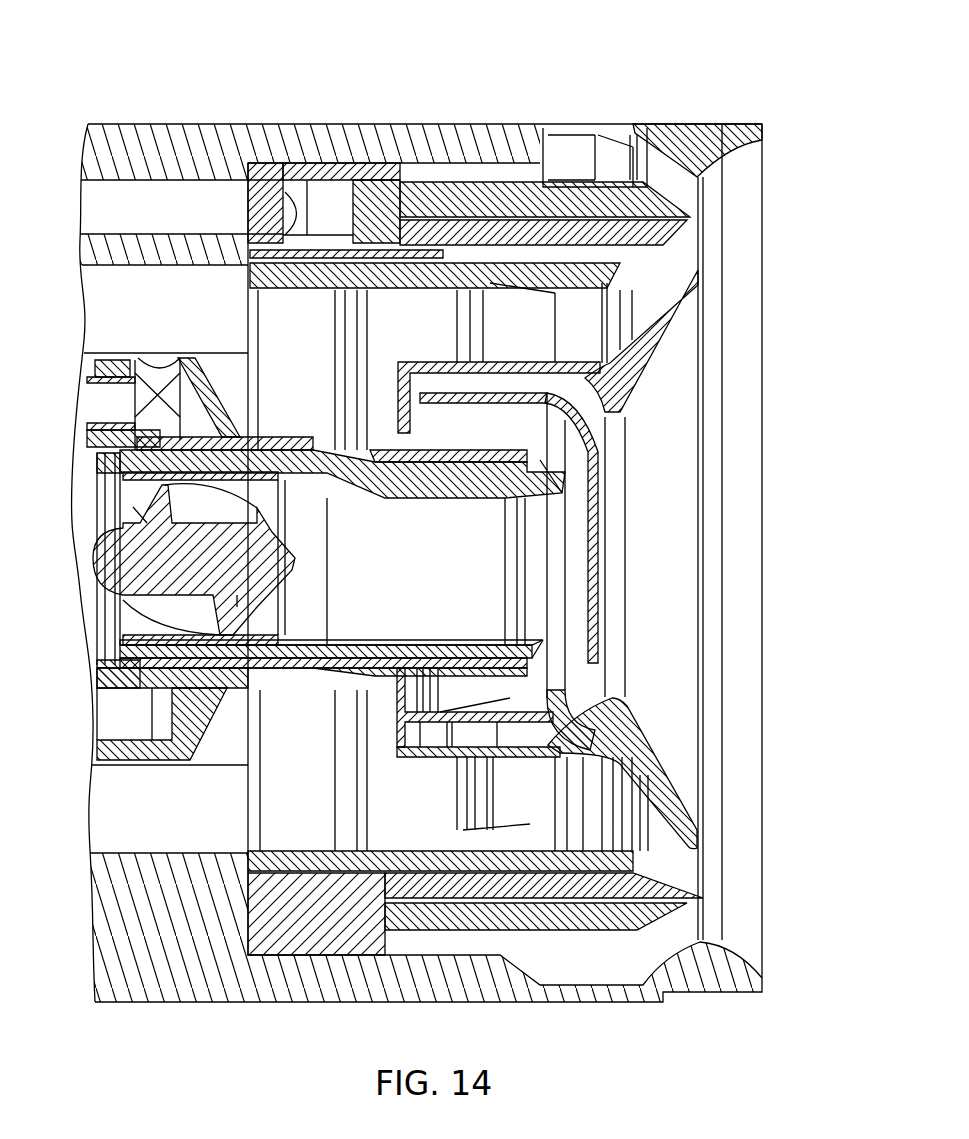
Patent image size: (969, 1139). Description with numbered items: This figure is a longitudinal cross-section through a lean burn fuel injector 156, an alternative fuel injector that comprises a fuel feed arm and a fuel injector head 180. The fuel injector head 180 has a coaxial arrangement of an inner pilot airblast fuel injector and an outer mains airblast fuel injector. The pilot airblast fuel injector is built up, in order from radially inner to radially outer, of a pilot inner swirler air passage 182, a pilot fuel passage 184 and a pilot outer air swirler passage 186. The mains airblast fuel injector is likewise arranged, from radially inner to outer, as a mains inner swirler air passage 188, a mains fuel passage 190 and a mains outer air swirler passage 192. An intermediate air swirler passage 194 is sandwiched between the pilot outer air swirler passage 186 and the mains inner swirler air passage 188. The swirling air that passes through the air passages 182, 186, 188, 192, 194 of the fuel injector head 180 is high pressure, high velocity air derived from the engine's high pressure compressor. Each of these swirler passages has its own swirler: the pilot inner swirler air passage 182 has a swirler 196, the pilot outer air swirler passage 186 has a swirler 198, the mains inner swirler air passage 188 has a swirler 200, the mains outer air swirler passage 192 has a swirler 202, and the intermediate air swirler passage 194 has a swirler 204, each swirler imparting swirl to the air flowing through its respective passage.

The lean burn fuel injector 156 is at (603, 62).
The fuel injector head 180 is at (356, 136).
The pilot inner swirler air passage 182 is at (443, 565).
The pilot fuel passage 184 is at (560, 482).
The pilot outer air swirler passage 186 is at (558, 668).
The mains inner swirler air passage 188 is at (586, 805).
The mains fuel passage 190 is at (636, 248).
The mains outer air swirler passage 192 is at (664, 178).
The intermediate air swirler passage 194 is at (588, 416).
The swirler 196 is at (232, 618).
The swirler 198 is at (455, 432).
The swirler 200 is at (513, 802).
The swirler 202 is at (583, 160).
The swirler 204 is at (470, 385).